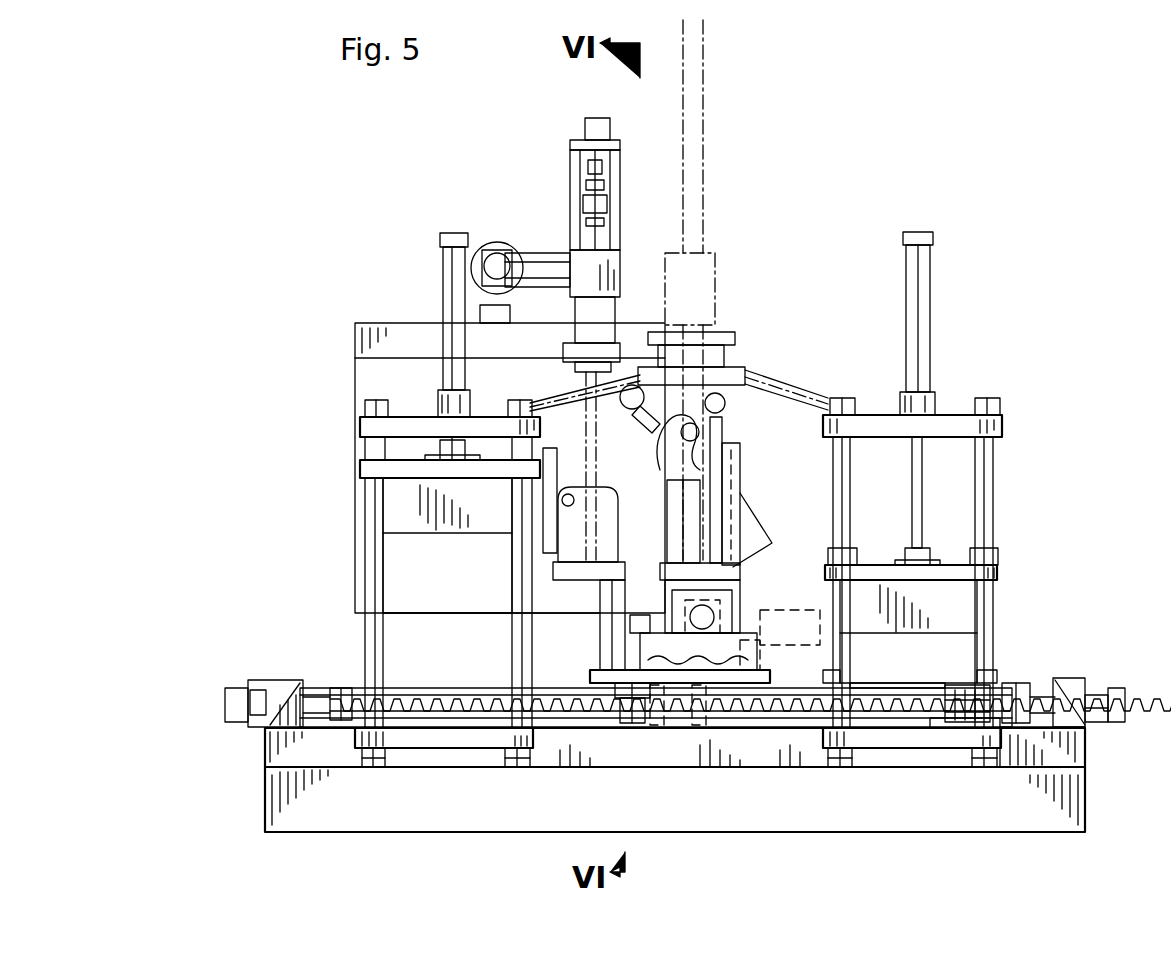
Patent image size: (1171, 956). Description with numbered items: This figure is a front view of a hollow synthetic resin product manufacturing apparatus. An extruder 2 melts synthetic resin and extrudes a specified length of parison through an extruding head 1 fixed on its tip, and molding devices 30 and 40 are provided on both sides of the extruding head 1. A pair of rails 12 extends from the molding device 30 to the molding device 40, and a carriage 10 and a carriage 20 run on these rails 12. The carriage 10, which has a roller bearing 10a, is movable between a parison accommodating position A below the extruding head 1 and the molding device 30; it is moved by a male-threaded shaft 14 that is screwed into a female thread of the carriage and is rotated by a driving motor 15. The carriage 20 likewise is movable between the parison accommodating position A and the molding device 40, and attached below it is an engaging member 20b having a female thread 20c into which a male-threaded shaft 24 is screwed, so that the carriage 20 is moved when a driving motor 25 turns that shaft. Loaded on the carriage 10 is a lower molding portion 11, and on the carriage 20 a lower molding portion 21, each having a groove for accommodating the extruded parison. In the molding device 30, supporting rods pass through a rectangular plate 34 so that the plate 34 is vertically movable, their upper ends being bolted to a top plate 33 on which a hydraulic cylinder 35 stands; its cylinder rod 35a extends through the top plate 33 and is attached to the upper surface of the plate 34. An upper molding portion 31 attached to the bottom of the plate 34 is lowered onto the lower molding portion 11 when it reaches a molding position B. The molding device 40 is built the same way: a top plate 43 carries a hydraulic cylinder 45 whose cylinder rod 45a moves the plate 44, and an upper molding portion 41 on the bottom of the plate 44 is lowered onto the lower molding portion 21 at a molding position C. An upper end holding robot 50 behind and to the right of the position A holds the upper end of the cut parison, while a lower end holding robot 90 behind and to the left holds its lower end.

The extruding head 1 is at (610, 298).
The extruder 2 is at (515, 228).
The carriage 10 is at (772, 680).
The roller bearing 10a is at (635, 727).
The lower molding portion 11 is at (742, 648).
The rails 12 is at (785, 724).
The male-threaded shaft 14 is at (565, 705).
The driving motor 15 is at (233, 703).
The carriage 20 is at (950, 675).
The roller bearing 20a is at (955, 725).
The engaging member 20b is at (1010, 703).
The female thread 20c is at (928, 660).
The lower molding portion 21 is at (840, 650).
The male-threaded shaft 24 is at (908, 725).
The driving motor 25 is at (1118, 688).
The molding device 30 is at (345, 492).
The upper molding portion 31 is at (420, 522).
The top plate 33 is at (405, 410).
The plate 34 is at (405, 482).
The hydraulic cylinder 35 is at (446, 300).
The cylinder rod 35a is at (445, 470).
The molding device 40 is at (1007, 525).
The upper molding portion 41 is at (960, 603).
The top plate 43 is at (948, 415).
The plate 44 is at (875, 560).
The hydraulic cylinder 45 is at (935, 298).
The cylinder rod 45a is at (925, 505).
The upper end holding robot 50 is at (735, 455).
The lower end holding robot 90 is at (575, 448).
The parison accommodating position A is at (742, 615).
The molding position B is at (436, 760).
The molding position C is at (880, 760).